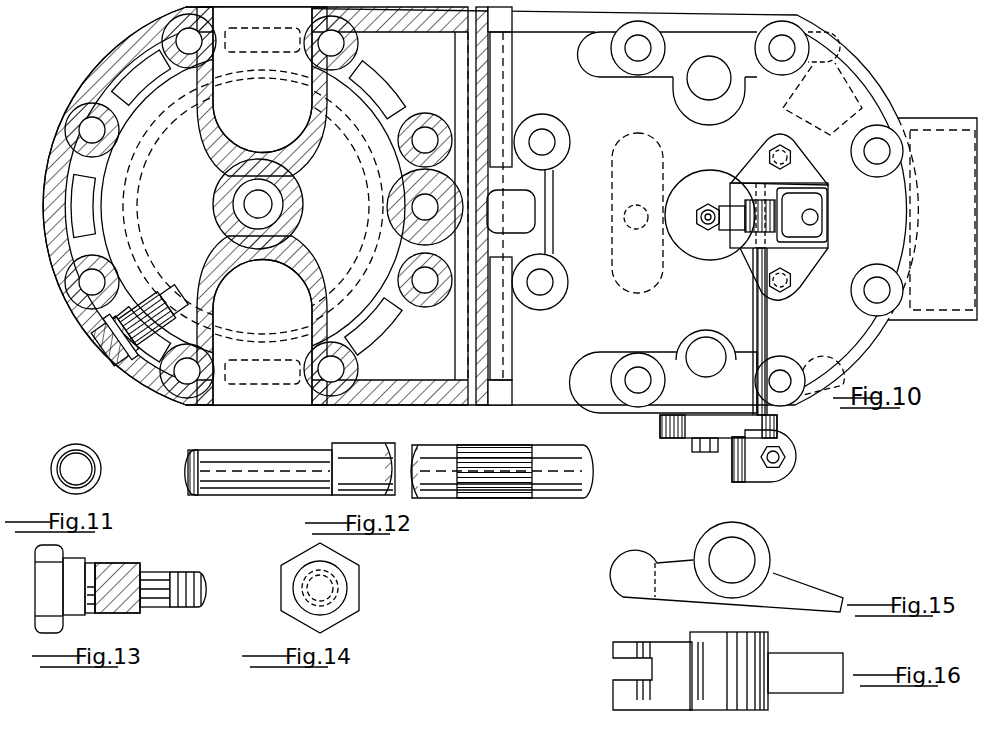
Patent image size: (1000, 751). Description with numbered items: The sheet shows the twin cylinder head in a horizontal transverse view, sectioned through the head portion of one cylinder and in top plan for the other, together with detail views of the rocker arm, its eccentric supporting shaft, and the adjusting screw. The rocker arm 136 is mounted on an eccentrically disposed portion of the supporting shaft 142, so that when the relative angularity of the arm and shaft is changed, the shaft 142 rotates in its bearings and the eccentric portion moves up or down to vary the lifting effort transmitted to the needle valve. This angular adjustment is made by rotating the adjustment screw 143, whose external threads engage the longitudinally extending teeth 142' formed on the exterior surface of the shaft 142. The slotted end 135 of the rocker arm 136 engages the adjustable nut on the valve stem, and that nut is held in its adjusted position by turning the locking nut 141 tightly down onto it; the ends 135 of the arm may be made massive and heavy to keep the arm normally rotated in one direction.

In FIG. 15, the slotted end 135 is at (617, 568).
In FIG. 16, the slotted end 135 is at (613, 645).
In FIG. 10, the rocker arm 136 is at (740, 226).
In FIG. 15, the rocker arm 136 is at (766, 553).
In FIG. 16, the rocker arm 136 is at (746, 704).
In FIG. 11, the locking nut 141 is at (96, 475).
In FIG. 12, the locking nut 141 is at (305, 492).
In FIG. 13, the locking nut 141 is at (128, 613).
In FIG. 10, the supporting shaft 142 is at (779, 299).
In FIG. 11, the supporting shaft 142 is at (93, 469).
In FIG. 12, the supporting shaft 142 is at (502, 484).
In FIG. 12, the longitudinally extending teeth 142' is at (494, 484).
In FIG. 10, the adjustment screw 143 is at (787, 453).
In FIG. 13, the adjustment screw 143 is at (164, 607).
In FIG. 14, the adjustment screw 143 is at (350, 590).